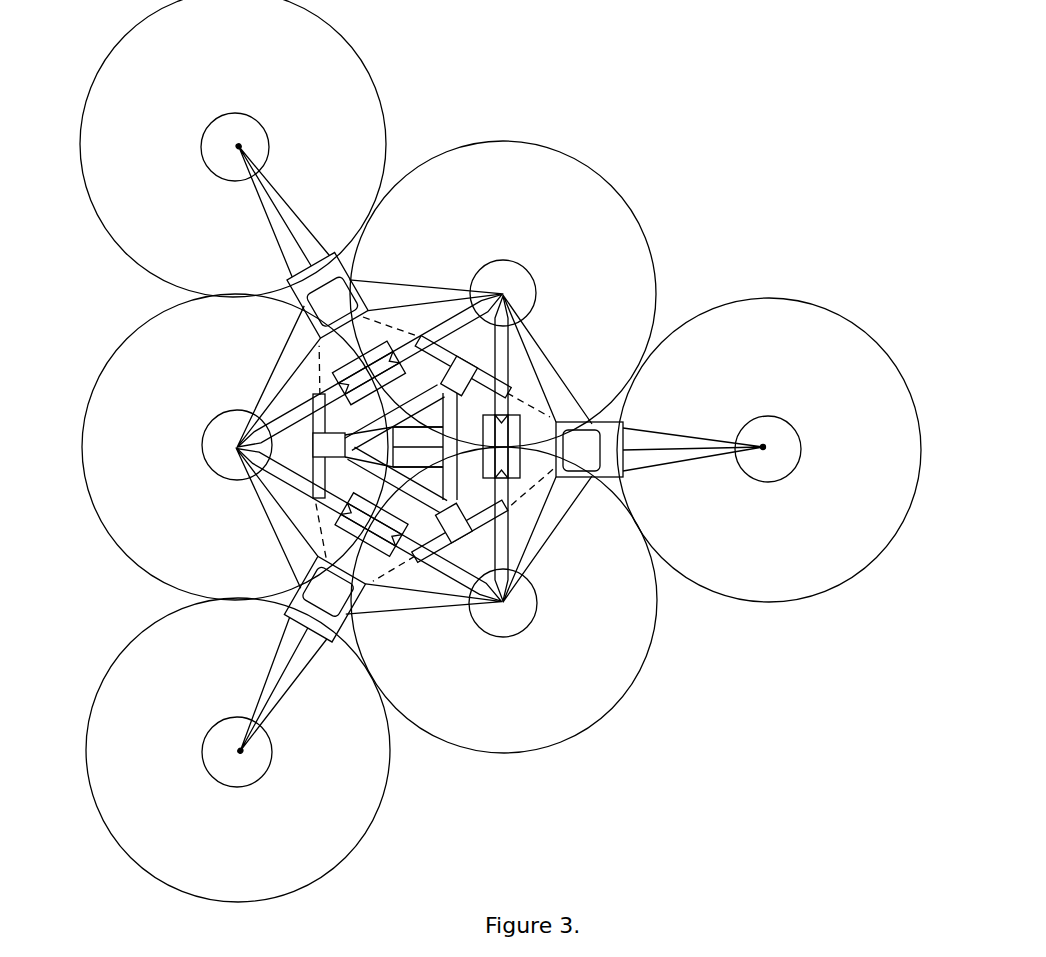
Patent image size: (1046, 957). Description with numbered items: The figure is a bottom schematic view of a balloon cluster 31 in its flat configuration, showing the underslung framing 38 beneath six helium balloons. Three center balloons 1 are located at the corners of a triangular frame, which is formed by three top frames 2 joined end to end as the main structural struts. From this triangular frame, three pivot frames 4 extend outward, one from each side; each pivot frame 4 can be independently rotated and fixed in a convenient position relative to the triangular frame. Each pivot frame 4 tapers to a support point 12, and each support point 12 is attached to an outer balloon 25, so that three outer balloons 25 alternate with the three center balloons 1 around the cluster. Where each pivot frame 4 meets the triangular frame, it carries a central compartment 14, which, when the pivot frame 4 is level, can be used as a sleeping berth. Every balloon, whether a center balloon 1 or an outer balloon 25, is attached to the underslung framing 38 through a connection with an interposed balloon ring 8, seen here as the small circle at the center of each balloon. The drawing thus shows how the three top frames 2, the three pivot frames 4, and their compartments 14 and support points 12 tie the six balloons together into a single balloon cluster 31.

The center balloon 1 is at (597, 167).
The top frame 2 is at (512, 346).
The pivot frame 4 is at (250, 240).
The balloon ring 8 is at (262, 130).
The support point 12 is at (237, 148).
The central compartment 14 is at (340, 284).
The outer balloon 25 is at (125, 254).
The balloon cluster 31 is at (707, 764).
The underslung framing 38 is at (736, 247).